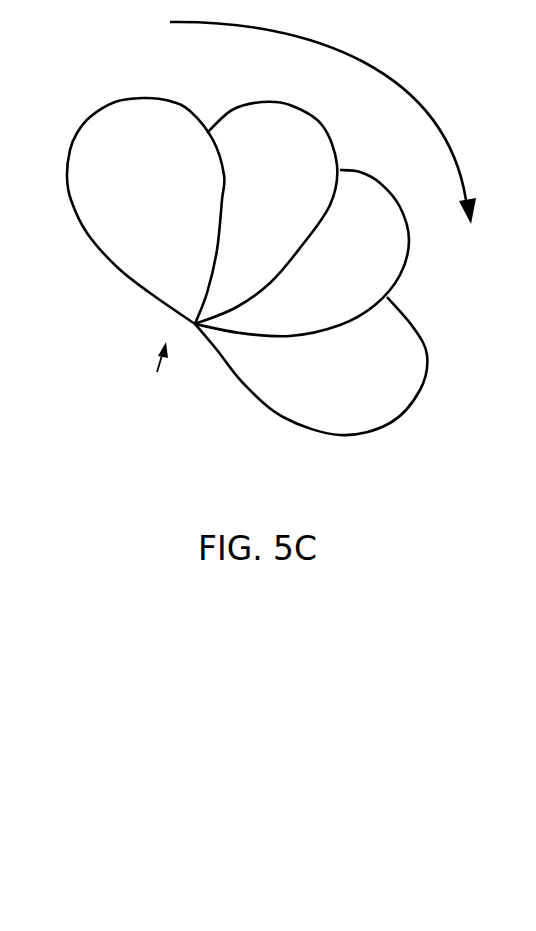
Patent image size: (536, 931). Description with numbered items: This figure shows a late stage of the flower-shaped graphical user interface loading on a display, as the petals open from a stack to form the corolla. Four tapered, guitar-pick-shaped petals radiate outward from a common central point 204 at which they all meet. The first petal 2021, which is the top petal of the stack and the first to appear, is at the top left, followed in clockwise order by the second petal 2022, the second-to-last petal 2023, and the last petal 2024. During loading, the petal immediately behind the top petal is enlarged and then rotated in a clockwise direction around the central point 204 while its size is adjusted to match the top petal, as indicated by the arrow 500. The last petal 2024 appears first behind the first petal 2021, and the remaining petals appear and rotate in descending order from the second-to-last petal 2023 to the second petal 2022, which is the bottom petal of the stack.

The first petal 2021 is at (95, 137).
The second petal 2022 is at (263, 108).
The second-to-last petal 2023 is at (393, 258).
The last petal 2024 is at (407, 335).
The central point 204 is at (159, 372).
The arrow 500 is at (323, 123).